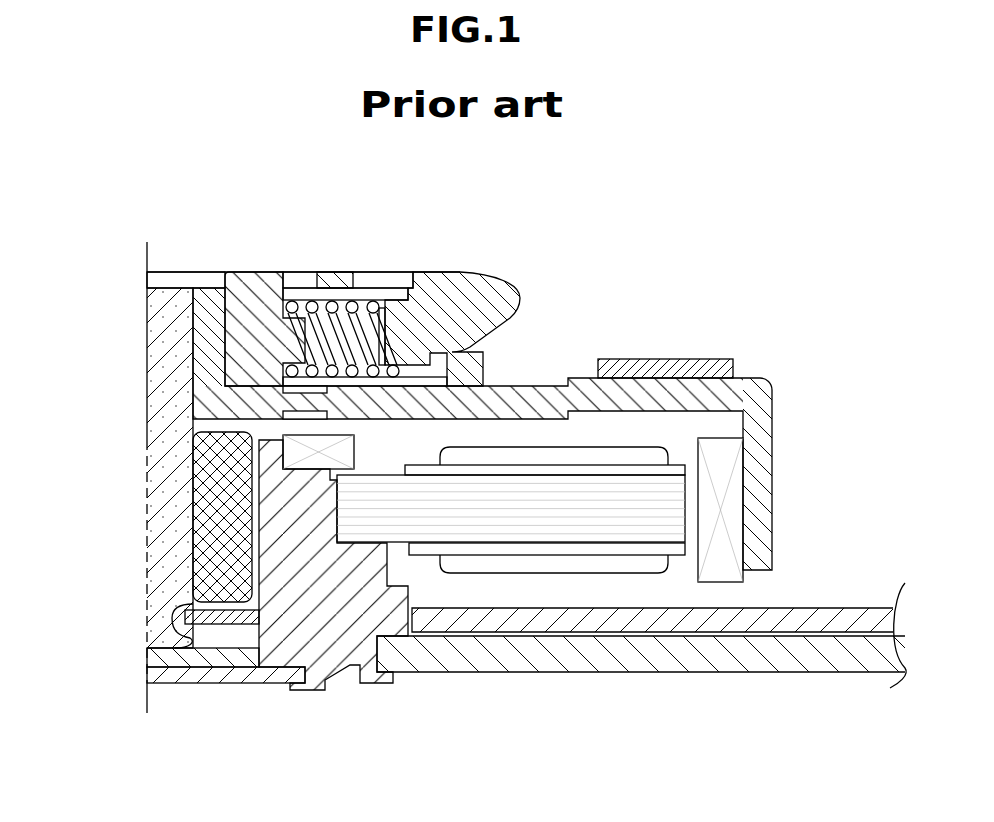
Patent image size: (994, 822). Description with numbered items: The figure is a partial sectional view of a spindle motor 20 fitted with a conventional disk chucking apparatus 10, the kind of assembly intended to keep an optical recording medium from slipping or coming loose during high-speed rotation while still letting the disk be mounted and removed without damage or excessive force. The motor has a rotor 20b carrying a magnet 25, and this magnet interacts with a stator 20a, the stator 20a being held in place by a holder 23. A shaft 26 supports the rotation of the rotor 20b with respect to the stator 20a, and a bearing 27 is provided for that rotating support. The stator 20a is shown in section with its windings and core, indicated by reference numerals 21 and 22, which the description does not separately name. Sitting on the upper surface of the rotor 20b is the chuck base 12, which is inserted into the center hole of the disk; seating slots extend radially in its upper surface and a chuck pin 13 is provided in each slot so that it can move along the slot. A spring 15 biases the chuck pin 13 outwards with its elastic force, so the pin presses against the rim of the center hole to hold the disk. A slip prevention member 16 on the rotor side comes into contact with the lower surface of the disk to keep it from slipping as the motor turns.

The disk chucking apparatus 10 is at (403, 286).
The chuck base 12 is at (250, 272).
The chuck pin 13 is at (440, 284).
The spring 15 is at (343, 303).
The slip prevention member 16 is at (654, 370).
The spindle motor 20 is at (468, 514).
The stator 20a is at (511, 617).
The rotor 20b is at (757, 435).
The rotor shaft 21 is at (487, 517).
The rotor core 22 is at (573, 565).
The holder 23 is at (335, 632).
The magnet 25 is at (733, 507).
The shaft 26 is at (160, 388).
The bearing 27 is at (205, 495).